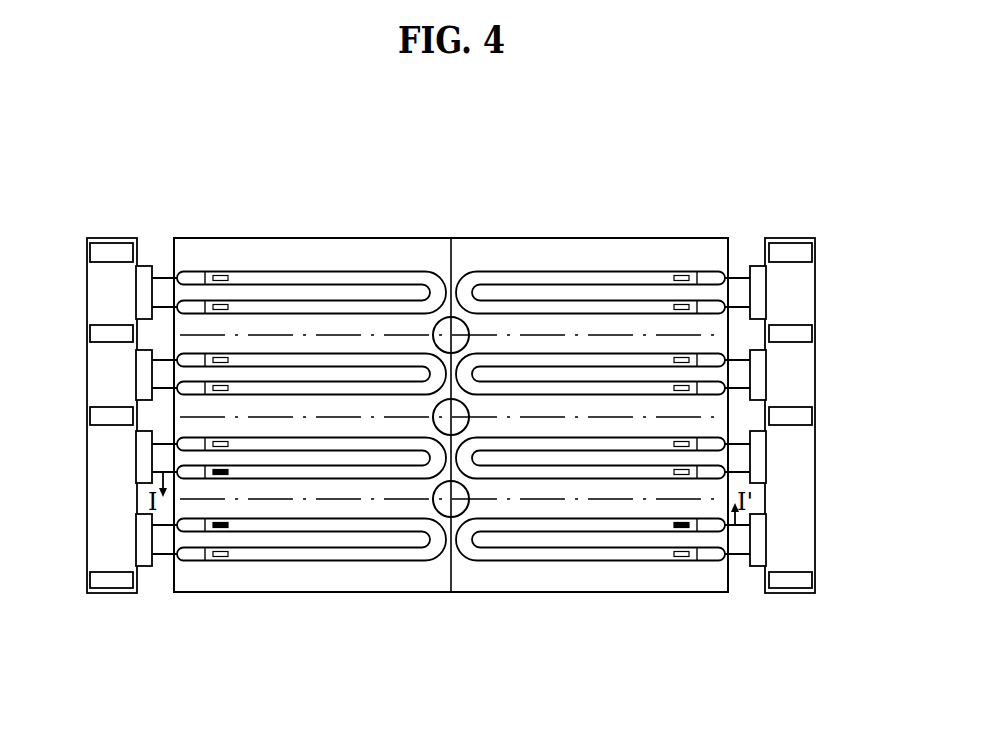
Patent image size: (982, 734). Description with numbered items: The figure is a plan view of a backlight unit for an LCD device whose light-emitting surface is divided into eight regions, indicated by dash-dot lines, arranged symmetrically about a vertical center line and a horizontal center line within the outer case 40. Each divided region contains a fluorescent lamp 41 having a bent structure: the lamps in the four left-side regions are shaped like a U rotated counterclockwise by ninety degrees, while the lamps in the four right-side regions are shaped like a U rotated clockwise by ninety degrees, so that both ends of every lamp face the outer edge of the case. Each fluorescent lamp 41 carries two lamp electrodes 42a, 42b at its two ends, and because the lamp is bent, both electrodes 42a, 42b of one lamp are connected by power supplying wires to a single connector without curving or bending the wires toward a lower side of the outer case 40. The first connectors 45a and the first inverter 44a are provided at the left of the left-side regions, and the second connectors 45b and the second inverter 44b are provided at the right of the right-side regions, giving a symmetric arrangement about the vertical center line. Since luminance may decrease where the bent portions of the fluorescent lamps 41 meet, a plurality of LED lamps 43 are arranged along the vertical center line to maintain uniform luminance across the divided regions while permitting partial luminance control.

The outer case 40 is at (428, 240).
The fluorescent lamp 41 is at (373, 272).
The lamp electrode 42a is at (222, 272).
The lamp electrode 42b is at (229, 303).
The LED lamp 43 is at (443, 508).
The first inverter 44a is at (97, 382).
The second inverter 44b is at (805, 382).
The first connector 45a is at (140, 295).
The second connector 45b is at (760, 295).